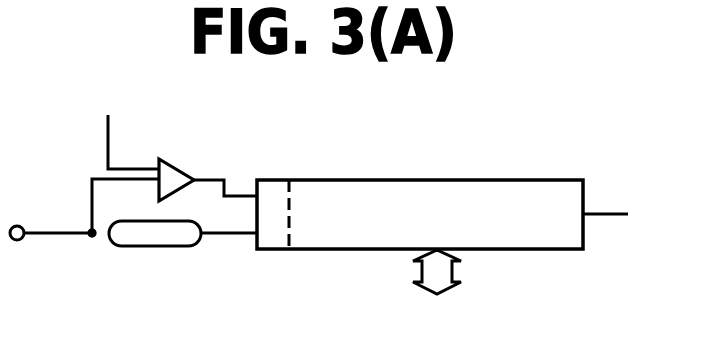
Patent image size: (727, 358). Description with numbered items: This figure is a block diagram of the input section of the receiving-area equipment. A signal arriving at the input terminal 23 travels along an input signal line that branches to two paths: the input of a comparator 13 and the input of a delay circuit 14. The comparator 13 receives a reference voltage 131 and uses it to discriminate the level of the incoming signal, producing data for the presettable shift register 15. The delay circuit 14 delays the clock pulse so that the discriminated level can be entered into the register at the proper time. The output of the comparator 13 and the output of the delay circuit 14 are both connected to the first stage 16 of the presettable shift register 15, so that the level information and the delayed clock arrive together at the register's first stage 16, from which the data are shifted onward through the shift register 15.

The comparator 13 is at (173, 163).
The reference voltage 131 is at (108, 128).
The delay circuit 14 is at (152, 247).
The presettable shift register 15 is at (430, 178).
The first stage 16 is at (272, 190).
The input terminal 23 is at (58, 237).